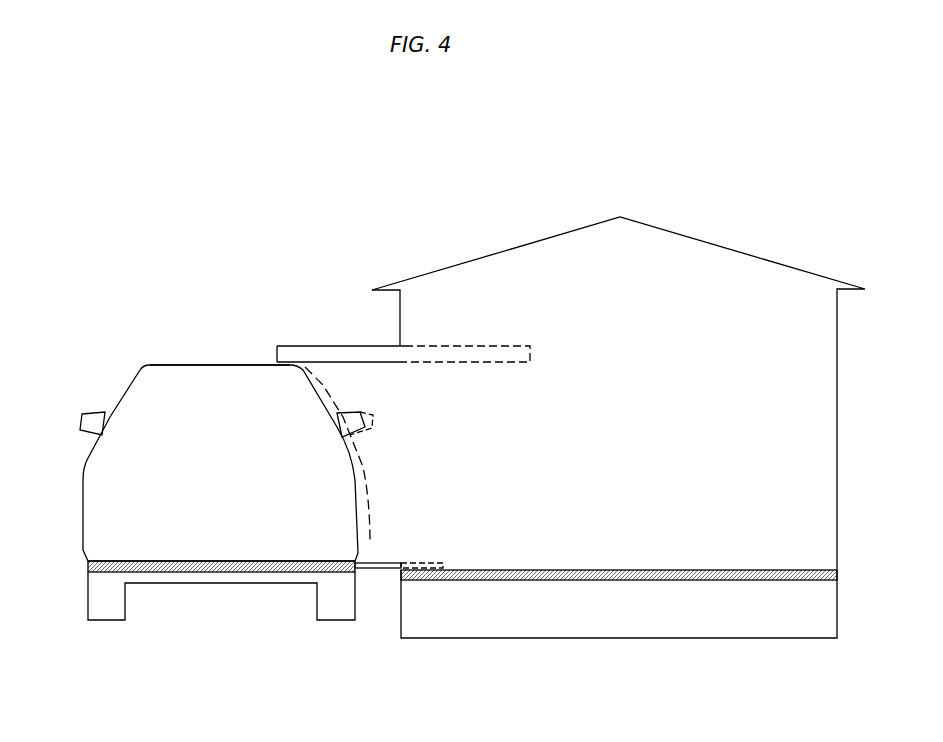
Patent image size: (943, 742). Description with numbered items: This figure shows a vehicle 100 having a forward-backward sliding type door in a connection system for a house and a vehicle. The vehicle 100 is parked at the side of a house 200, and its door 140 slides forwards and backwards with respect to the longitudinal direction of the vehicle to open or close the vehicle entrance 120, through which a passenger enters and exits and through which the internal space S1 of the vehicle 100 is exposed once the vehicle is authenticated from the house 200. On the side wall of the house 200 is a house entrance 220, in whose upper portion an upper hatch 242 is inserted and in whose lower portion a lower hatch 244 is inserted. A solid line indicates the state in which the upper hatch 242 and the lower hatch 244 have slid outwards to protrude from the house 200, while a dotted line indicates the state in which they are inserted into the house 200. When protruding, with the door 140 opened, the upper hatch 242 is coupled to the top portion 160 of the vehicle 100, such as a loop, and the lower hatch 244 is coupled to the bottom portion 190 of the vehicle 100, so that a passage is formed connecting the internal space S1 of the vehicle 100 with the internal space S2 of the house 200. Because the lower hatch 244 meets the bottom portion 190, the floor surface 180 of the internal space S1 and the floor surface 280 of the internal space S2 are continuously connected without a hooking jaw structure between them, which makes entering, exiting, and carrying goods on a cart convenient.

The vehicle 100 is at (97, 397).
The vehicle entrance 120 is at (340, 470).
The door 140 is at (345, 425).
The top portion 160 is at (242, 355).
The floor surface 180 is at (173, 567).
The bottom portion 190 is at (365, 577).
The house 200 is at (692, 212).
The house entrance 220 is at (410, 427).
The upper hatch 242 is at (422, 345).
The lower hatch 244 is at (385, 570).
The floor surface 280 is at (540, 578).
The internal space S1 is at (202, 490).
The internal space S2 is at (638, 470).